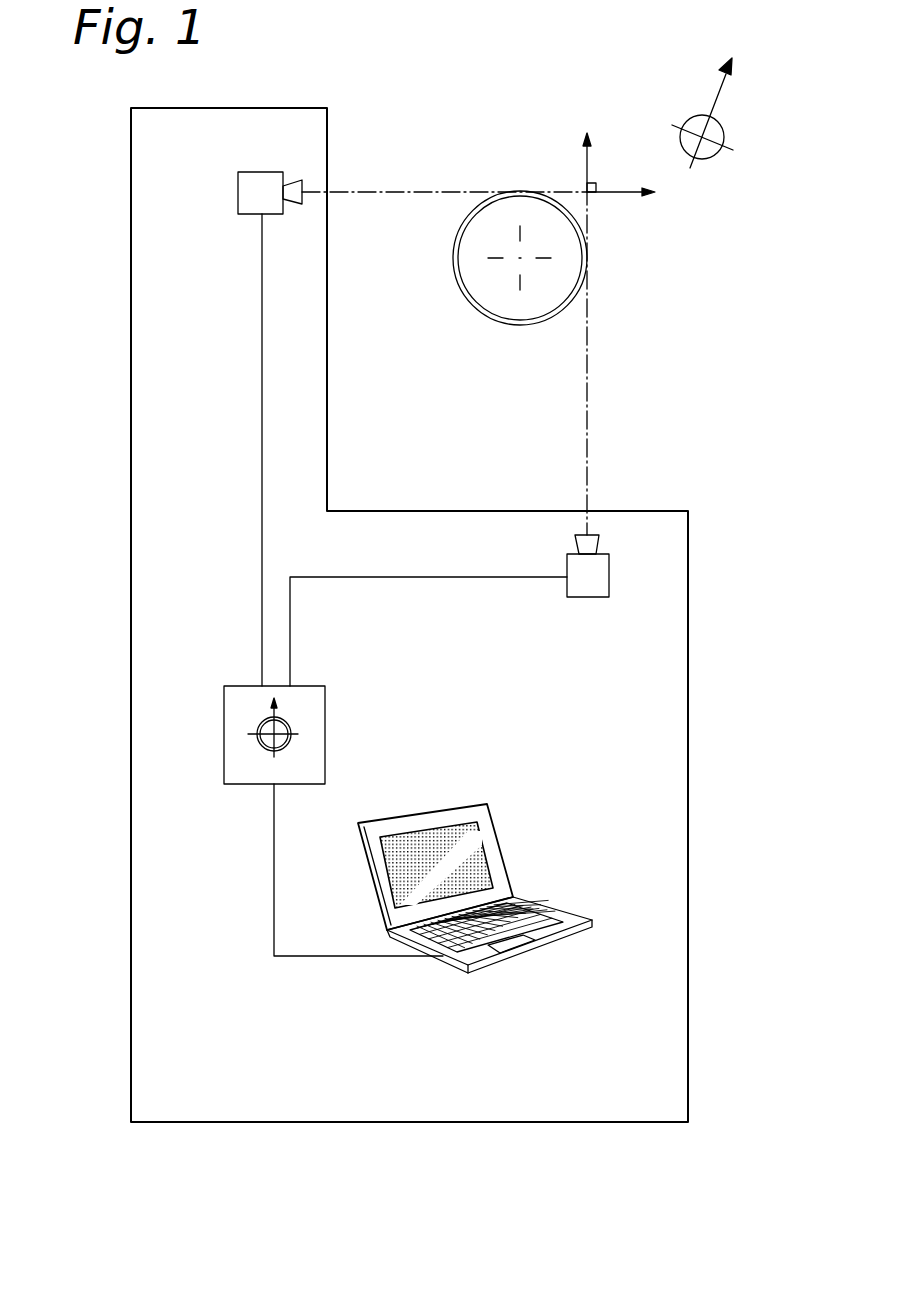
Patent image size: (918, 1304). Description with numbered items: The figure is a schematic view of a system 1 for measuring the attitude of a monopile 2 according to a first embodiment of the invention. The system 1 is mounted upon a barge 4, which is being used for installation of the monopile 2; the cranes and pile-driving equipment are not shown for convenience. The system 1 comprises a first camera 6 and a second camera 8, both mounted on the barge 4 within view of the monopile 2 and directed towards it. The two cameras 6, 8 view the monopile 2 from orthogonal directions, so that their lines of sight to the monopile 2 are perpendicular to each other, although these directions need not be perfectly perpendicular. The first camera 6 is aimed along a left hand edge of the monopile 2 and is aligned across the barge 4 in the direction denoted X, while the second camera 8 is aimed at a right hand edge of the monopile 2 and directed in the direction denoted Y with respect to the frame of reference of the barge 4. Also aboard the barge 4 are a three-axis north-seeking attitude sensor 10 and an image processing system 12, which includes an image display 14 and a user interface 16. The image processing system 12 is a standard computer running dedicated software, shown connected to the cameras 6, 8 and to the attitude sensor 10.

The system 1 is at (116, 442).
The monopile 2 is at (587, 282).
The barge 4 is at (672, 687).
The first camera 6 is at (260, 186).
The second camera 8 is at (595, 578).
The 3-axis north-seeking attitude sensor 10 is at (243, 737).
The image processing system 12 is at (551, 878).
The image display 14 is at (473, 855).
The user interface 16 is at (573, 933).